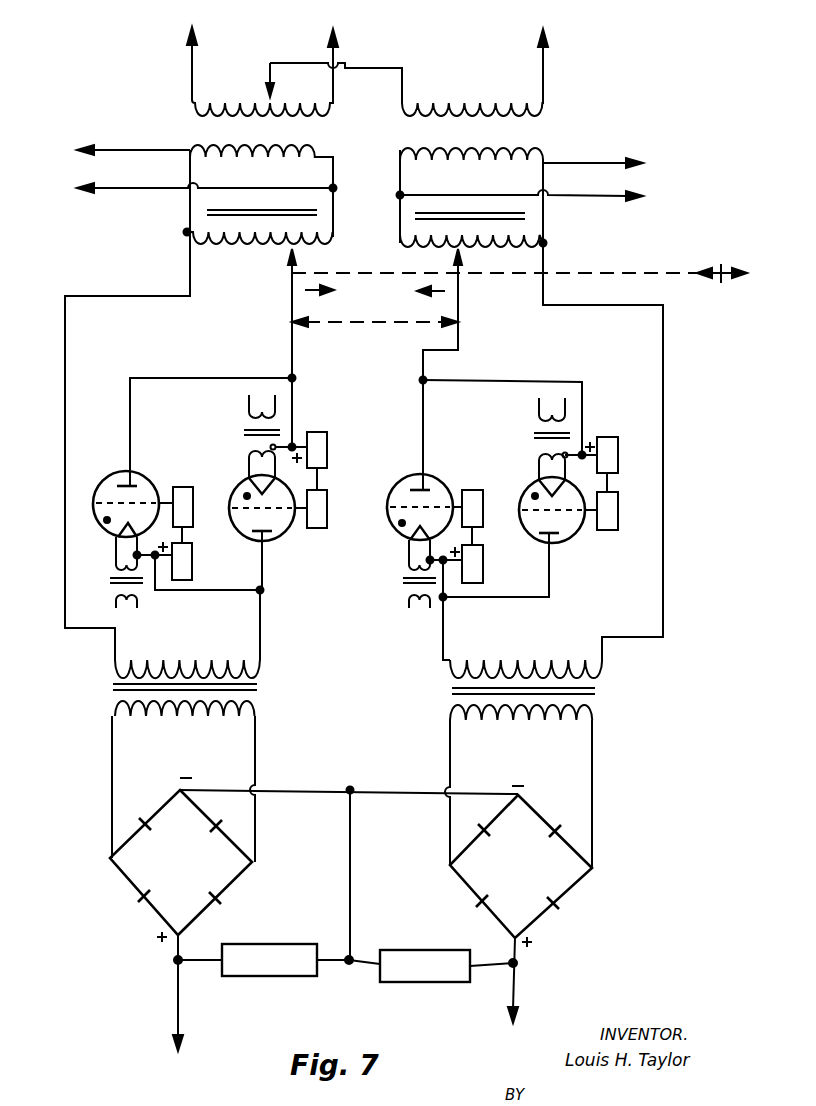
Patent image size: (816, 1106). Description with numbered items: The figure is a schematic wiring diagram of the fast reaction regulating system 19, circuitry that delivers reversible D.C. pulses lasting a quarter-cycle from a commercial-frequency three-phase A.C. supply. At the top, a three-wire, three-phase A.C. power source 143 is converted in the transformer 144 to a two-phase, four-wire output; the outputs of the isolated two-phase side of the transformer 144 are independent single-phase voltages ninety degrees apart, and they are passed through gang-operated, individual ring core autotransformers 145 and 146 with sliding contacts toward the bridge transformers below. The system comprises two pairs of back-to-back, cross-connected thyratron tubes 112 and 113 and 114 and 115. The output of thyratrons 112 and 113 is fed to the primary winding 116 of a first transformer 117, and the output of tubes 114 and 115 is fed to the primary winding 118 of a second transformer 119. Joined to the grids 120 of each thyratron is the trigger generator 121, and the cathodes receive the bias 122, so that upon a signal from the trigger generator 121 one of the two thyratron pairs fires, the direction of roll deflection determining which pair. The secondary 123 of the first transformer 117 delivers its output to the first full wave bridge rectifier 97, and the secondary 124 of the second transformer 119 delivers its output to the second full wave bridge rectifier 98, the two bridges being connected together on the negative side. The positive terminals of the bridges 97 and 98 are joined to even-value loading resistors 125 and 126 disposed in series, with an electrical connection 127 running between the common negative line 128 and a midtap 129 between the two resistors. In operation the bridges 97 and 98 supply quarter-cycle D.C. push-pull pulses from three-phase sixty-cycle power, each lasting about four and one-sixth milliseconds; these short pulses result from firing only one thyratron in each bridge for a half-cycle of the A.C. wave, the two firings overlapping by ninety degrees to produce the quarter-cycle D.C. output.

The fast reaction regulating system 19 is at (369, 715).
The first full wave bridge rectifier 97 is at (232, 888).
The second full wave bridge rectifier 98 is at (468, 904).
The thyratron tube 112 is at (112, 480).
The thyratron tube 113 is at (243, 480).
The thyratron tube 114 is at (410, 478).
The thyratron tube 115 is at (530, 478).
The primary winding 116 is at (188, 668).
The first transformer 117 is at (104, 691).
The primary winding 118 is at (541, 648).
The second transformer 119 is at (659, 709).
The grid 120 is at (140, 512).
The trigger generator 121 is at (188, 487).
The bias 122 is at (192, 557).
The secondary 123 is at (200, 721).
The secondary 124 is at (525, 723).
The loading resistor 125 is at (267, 930).
The loading resistor 126 is at (453, 950).
The electrical connection 127 is at (351, 886).
The common negative line 128 is at (407, 778).
The midtap 129 is at (348, 963).
The 3-wire, 3-phase A.C. power source 143 is at (415, 45).
The transformer 144 is at (405, 149).
The ring core autotransformer 145 is at (237, 248).
The ring core autotransformer 146 is at (490, 250).